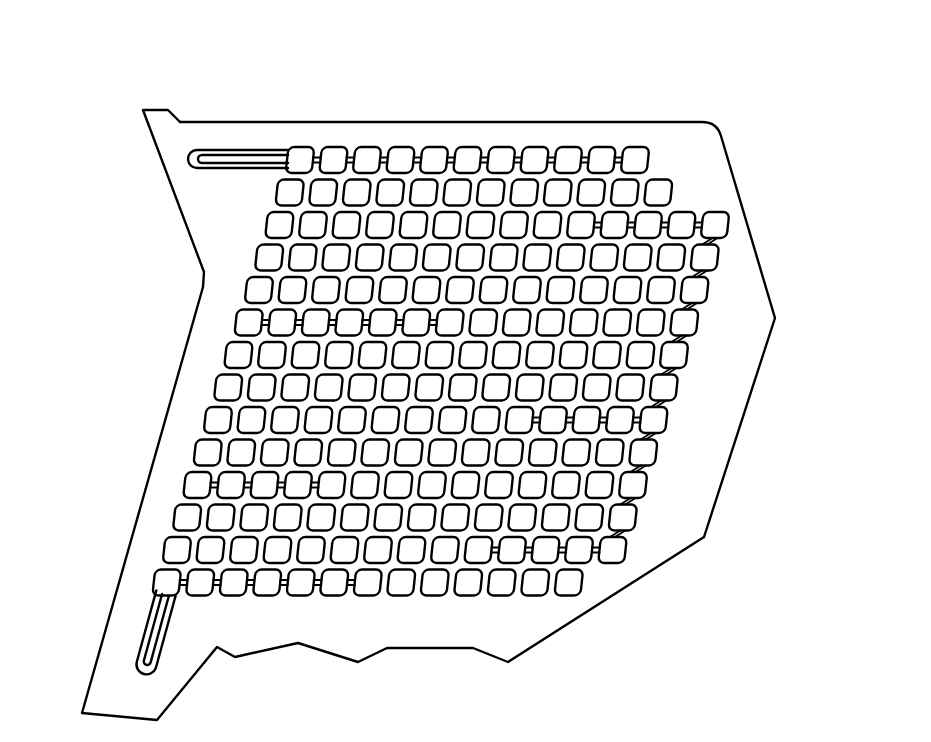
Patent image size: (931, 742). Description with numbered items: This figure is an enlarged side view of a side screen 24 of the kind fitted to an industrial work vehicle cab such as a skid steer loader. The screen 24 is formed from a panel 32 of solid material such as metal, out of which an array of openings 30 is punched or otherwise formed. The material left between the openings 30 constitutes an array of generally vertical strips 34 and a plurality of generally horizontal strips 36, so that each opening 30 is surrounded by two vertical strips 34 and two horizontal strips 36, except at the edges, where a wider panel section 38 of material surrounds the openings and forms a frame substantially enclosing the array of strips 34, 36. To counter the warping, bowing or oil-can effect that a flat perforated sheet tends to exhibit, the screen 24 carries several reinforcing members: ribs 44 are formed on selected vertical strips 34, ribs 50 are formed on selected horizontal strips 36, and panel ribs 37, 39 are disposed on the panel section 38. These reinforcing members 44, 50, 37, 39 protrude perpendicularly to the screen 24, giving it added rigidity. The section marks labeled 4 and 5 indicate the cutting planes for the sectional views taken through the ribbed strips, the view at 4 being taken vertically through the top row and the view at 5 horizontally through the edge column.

The side screen 24 is at (718, 83).
The panel 32 is at (737, 140).
The panel section 38 is at (140, 550).
The panel rib 37 is at (233, 150).
The panel rib 39 is at (145, 628).
The openings 30 is at (257, 288).
The horizontal strips 36 is at (218, 380).
The vertical strips 34 is at (192, 487).
The ribs 44 is at (703, 217).
The ribs 50 is at (680, 373).
The section line 4- 4 is at (333, 157).
The section line 5- 5 is at (645, 456).